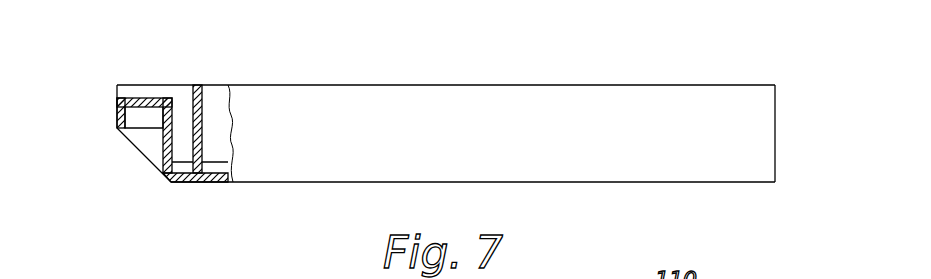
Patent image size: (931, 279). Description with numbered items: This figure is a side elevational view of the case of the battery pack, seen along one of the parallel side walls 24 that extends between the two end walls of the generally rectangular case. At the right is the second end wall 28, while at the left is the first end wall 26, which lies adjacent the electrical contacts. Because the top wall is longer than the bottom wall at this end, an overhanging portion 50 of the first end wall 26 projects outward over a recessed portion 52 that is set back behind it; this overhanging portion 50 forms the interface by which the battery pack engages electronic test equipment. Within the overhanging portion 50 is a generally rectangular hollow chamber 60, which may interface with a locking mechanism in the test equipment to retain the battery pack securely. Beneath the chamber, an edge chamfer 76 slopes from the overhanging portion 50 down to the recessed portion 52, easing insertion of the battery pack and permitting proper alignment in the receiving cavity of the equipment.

The side wall 24 is at (537, 130).
The second end wall 28 is at (775, 138).
The overhanging portion 50 is at (117, 105).
The hollow chamber 60 is at (153, 118).
The edge chamfer 76 is at (149, 161).
The recessed portion 52 is at (163, 174).
The first end wall 26 is at (111, 144).